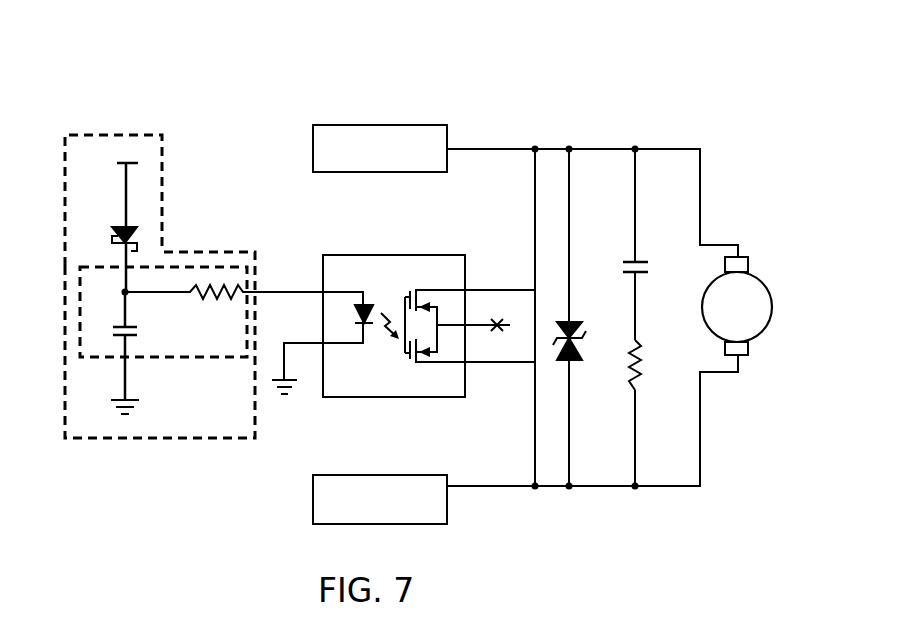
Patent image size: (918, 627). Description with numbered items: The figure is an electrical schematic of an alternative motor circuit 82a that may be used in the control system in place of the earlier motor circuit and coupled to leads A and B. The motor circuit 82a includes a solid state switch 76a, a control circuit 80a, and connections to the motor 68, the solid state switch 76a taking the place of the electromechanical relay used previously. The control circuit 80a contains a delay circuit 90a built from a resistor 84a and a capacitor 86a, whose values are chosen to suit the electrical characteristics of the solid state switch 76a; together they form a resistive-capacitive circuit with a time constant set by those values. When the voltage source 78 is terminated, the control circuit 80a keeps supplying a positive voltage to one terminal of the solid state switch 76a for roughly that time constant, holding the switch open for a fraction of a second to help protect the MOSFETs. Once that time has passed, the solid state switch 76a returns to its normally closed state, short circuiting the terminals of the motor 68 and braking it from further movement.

The motor 68 is at (764, 288).
The solid state switch 76a is at (420, 255).
The voltage source 78 is at (126, 197).
The control circuit 80a is at (172, 438).
The motor circuit 82a is at (483, 75).
The resistor 84a is at (212, 298).
The capacitor 86a is at (132, 323).
The delay circuit 90a is at (158, 357).